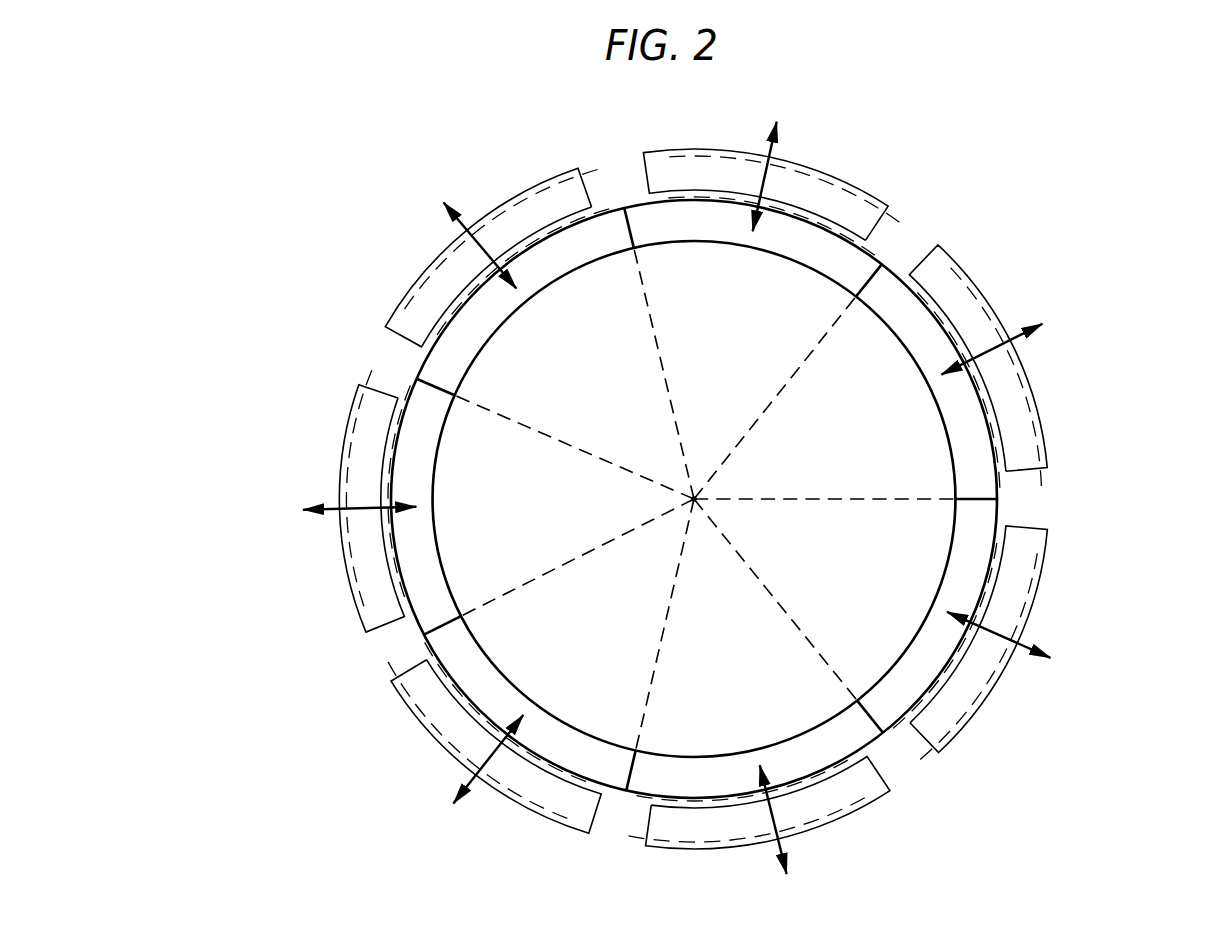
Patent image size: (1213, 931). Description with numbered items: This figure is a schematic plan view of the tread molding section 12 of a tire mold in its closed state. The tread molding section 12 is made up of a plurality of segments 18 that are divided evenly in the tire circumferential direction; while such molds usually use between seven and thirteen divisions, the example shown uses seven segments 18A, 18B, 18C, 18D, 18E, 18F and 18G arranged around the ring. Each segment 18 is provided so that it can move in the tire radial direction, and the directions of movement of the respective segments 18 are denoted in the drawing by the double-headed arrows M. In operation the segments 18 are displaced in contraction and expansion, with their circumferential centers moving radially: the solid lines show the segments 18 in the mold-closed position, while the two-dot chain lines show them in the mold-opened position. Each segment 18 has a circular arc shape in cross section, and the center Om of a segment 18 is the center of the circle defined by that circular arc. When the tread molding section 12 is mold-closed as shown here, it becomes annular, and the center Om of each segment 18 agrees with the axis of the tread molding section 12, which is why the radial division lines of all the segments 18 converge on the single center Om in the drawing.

The tread molding section 12 is at (673, 116).
The segment 18 is at (958, 252).
The segment 18A is at (828, 246).
The segment 18B is at (1000, 437).
The segment 18C is at (1012, 560).
The segment 18D is at (845, 740).
The segment 18E is at (478, 688).
The segment 18F is at (405, 442).
The segment 18G is at (470, 312).
The direction of movement M is at (770, 172).
The center of the segment Om is at (695, 502).